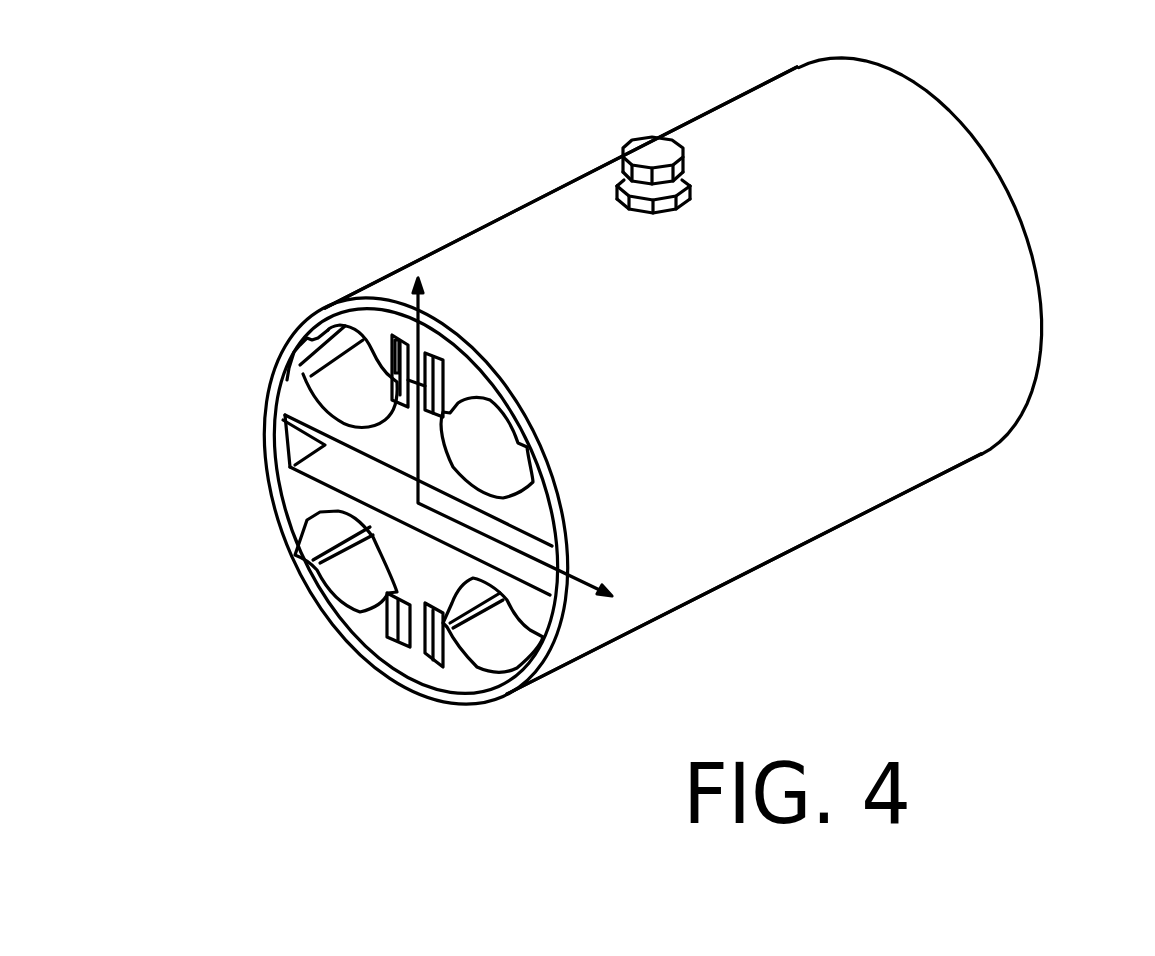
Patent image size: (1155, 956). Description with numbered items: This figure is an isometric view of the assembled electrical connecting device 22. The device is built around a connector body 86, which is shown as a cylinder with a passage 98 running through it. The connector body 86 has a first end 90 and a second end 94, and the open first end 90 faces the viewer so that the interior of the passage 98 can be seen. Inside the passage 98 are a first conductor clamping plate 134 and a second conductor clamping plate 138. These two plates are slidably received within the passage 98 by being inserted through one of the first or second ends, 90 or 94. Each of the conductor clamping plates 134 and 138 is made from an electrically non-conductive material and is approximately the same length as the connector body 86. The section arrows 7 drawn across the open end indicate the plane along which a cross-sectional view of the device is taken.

The battery pack housing 22 is at (512, 209).
The second end 94 is at (1023, 233).
The connector body 86 is at (757, 380).
The first end 90 is at (273, 371).
The passage 98 is at (290, 440).
The first conductor clamping plate 134 is at (417, 463).
The second conductor clamping plate 138 is at (443, 578).
The section line 7- 7 is at (525, 440).